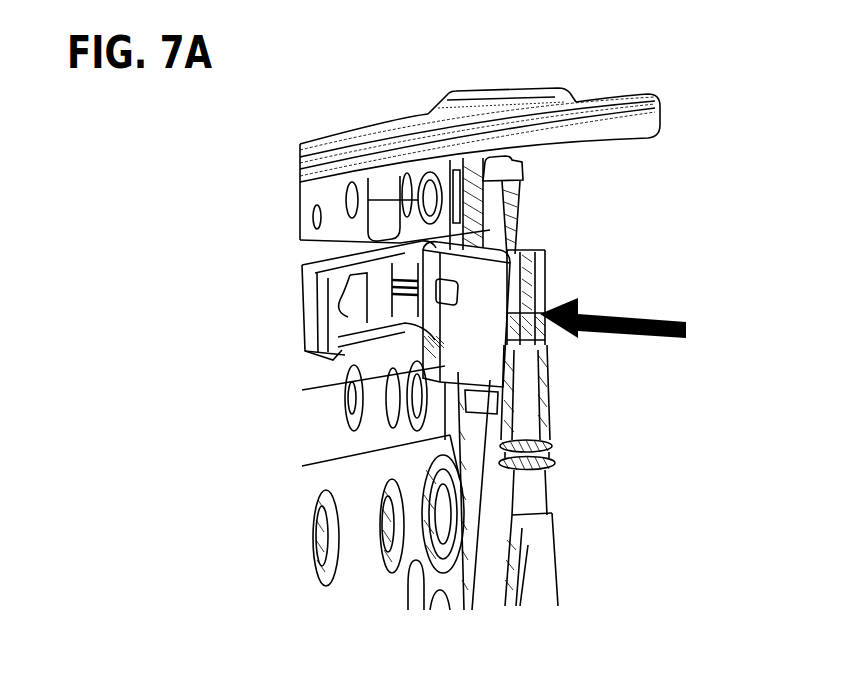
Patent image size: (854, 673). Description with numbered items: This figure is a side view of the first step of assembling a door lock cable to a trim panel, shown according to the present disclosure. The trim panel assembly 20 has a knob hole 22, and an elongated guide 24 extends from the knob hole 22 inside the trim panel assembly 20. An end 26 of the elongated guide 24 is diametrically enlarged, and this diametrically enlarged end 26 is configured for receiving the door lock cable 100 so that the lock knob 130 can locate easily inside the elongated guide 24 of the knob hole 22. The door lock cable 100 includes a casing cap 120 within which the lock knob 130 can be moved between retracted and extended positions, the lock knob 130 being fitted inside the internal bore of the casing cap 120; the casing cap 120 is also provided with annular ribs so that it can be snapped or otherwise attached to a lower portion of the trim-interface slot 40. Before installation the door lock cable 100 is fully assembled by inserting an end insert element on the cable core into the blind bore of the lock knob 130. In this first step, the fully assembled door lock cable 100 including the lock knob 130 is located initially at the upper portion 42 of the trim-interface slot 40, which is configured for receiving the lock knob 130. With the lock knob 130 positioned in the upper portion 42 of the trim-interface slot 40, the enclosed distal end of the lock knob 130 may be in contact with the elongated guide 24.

The trim panel assembly 20 is at (352, 142).
The knob hole 22 is at (483, 82).
The elongated guide 24 is at (517, 148).
The diametrically enlarged end 26 is at (518, 163).
The trim-interface slot 40 is at (447, 332).
The upper portion of the trim-interface slot 42 is at (468, 251).
The door lock cable 100 is at (562, 462).
The casing cap 120 is at (538, 398).
The lock knob 130 is at (510, 247).